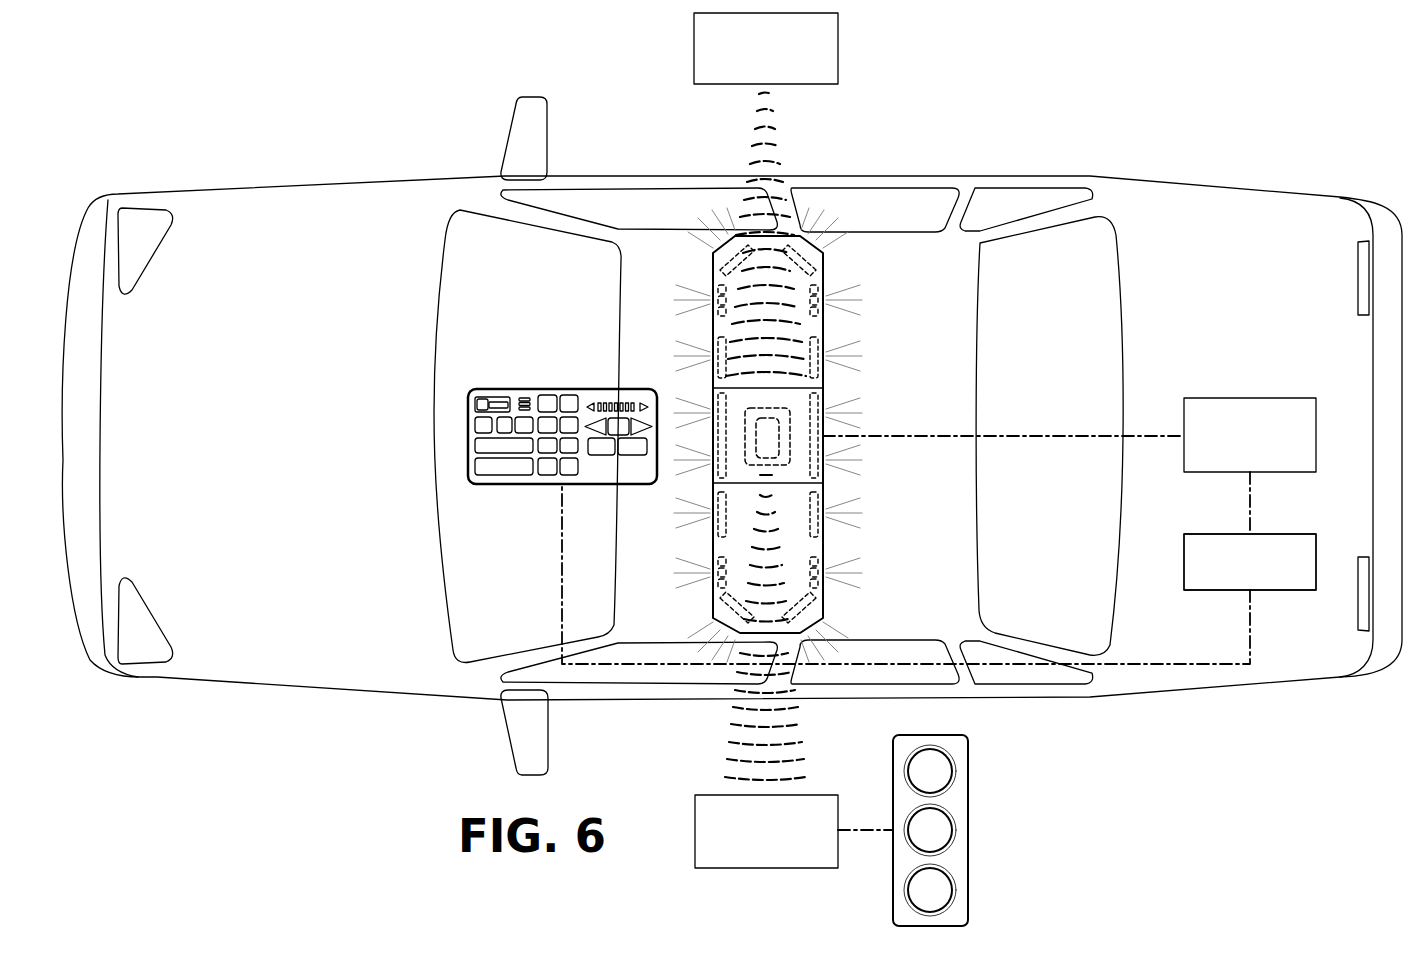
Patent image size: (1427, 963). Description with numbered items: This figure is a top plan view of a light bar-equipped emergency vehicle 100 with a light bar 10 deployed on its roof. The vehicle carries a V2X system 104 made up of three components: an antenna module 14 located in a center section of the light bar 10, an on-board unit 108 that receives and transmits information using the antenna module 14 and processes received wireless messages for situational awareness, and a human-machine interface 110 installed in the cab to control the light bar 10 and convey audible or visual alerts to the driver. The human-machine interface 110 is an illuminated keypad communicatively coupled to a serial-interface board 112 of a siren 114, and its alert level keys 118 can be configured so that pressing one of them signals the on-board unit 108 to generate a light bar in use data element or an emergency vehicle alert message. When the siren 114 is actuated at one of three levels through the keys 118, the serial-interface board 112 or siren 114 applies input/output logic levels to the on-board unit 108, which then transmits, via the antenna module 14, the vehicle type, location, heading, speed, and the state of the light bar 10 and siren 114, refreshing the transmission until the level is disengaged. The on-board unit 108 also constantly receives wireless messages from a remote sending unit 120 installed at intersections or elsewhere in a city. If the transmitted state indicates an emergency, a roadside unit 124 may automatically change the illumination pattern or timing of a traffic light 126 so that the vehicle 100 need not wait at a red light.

The light bar 10 is at (842, 328).
The antenna module 14 is at (782, 455).
The light bar-equipped vehicle 100 is at (1130, 177).
The V2X system 104 is at (592, 309).
The on-board unit 108 is at (1250, 398).
The human-machine interface 110 is at (527, 437).
The serial-interface board 112 is at (1221, 590).
The siren 114 is at (1273, 534).
The alert level keys 118 is at (505, 427).
The remote sending unit 120 is at (840, 48).
The roadside unit 124 is at (789, 847).
The traffic light 126 is at (968, 830).